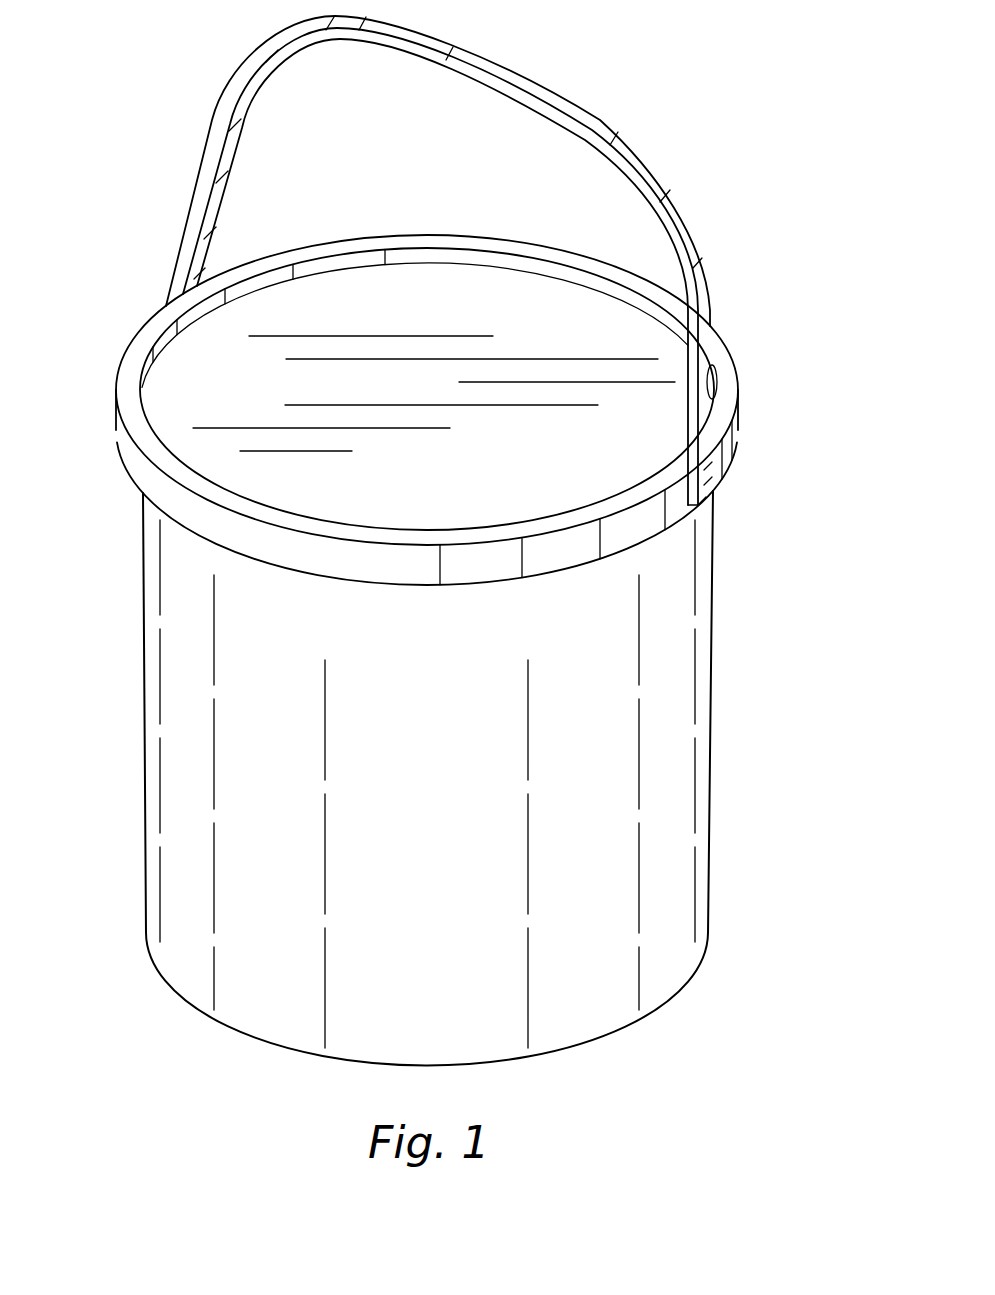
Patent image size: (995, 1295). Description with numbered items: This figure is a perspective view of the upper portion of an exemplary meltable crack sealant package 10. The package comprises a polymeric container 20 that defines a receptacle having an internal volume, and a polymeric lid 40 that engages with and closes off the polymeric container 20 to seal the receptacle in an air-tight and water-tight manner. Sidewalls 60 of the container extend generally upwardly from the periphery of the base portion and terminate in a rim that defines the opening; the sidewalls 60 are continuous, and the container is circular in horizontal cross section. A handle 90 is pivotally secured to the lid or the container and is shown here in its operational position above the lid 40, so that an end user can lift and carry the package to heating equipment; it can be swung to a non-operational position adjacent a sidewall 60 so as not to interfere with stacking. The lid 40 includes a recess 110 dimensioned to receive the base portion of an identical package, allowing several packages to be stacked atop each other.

The crack sealant package 10 is at (92, 315).
The polymeric container 20 is at (143, 737).
The polymeric lid 40 is at (740, 413).
The sidewalls 60 is at (710, 797).
The handle 90 is at (566, 100).
The recess 110 is at (458, 478).